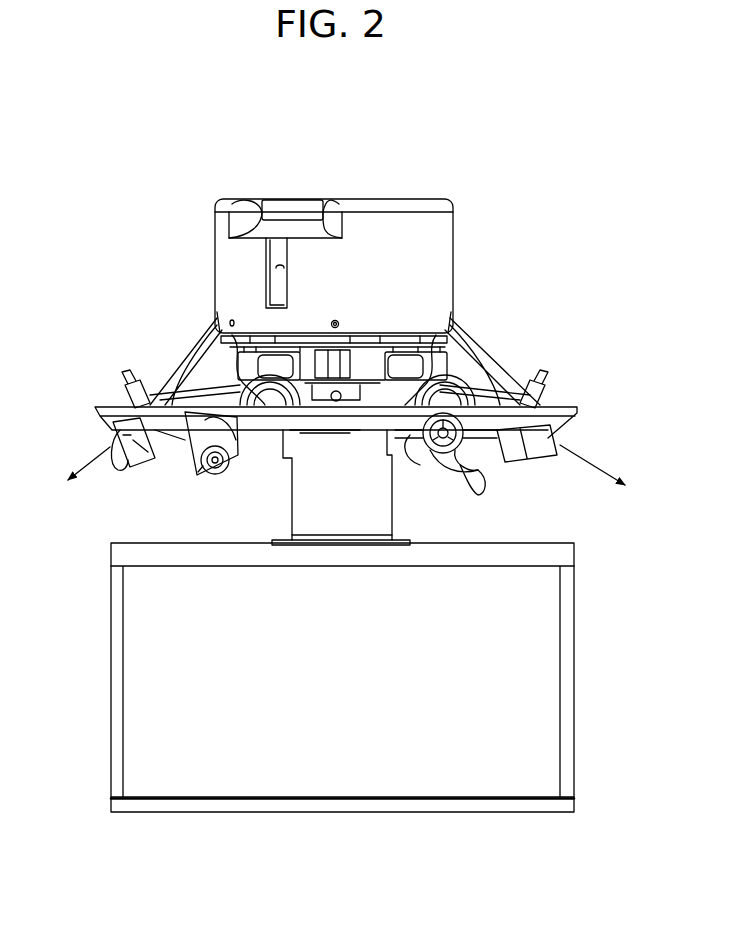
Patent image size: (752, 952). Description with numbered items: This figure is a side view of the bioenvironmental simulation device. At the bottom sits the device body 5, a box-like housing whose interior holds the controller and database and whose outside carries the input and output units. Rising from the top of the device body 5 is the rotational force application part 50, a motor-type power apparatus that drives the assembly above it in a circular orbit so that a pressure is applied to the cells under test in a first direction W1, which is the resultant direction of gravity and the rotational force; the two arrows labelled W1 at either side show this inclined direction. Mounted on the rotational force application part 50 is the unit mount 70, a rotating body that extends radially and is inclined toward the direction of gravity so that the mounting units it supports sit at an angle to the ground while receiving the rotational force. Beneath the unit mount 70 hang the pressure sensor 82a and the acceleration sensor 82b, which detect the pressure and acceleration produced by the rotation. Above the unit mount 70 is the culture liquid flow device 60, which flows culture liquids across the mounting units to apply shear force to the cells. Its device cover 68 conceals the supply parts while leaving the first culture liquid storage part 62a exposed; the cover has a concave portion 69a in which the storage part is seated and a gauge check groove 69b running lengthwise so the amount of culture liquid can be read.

The device body 5 is at (540, 687).
The rotational force application part 50 is at (382, 500).
The culture liquid flow device 60 is at (346, 230).
The first culture liquid storage part 62a is at (290, 205).
The device cover 68 is at (447, 256).
The concave portion 69a is at (258, 200).
The gauge check groove 69b is at (278, 268).
The unit mount 70 is at (555, 415).
The pressure sensor 82a is at (225, 470).
The acceleration sensor 82b is at (132, 455).
The first direction W1 is at (334, 479).